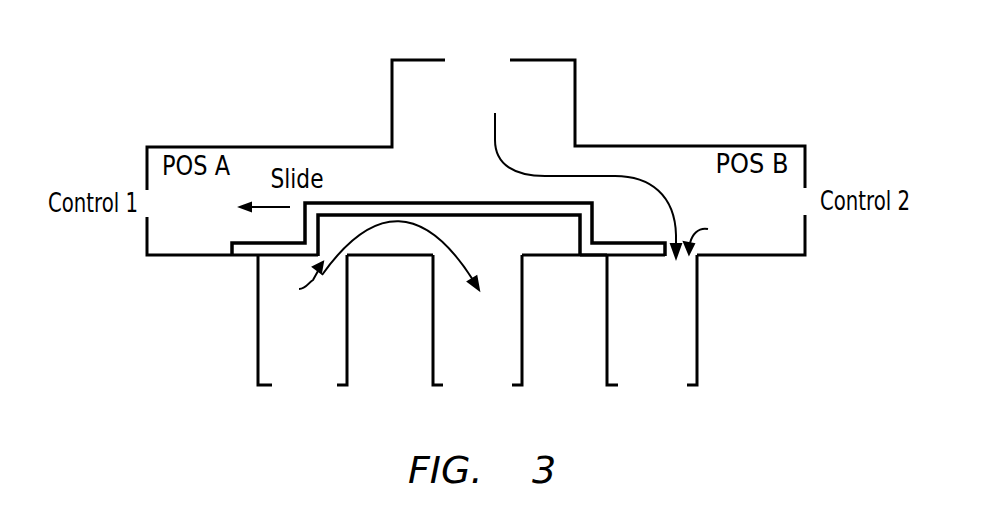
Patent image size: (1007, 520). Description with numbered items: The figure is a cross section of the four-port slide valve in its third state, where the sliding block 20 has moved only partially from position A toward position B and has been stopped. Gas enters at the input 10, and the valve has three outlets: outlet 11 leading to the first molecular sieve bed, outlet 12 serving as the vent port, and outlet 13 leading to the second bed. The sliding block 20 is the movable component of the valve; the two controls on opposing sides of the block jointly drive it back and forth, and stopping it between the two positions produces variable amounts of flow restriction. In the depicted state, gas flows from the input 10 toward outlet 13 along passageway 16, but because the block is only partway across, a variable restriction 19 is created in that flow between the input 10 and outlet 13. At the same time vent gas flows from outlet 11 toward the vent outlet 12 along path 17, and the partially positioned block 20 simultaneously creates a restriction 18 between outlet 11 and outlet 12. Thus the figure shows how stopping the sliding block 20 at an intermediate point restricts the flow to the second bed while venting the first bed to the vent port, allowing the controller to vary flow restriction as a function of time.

The input 10 is at (476, 61).
The outlet 11 is at (292, 374).
The outlet 12 is at (463, 374).
The outlet 13 is at (644, 374).
The open passageway 16 is at (636, 178).
The path 17 is at (456, 247).
The restriction 18 is at (299, 281).
The restriction 19 is at (708, 233).
The sliding block 20 is at (447, 202).